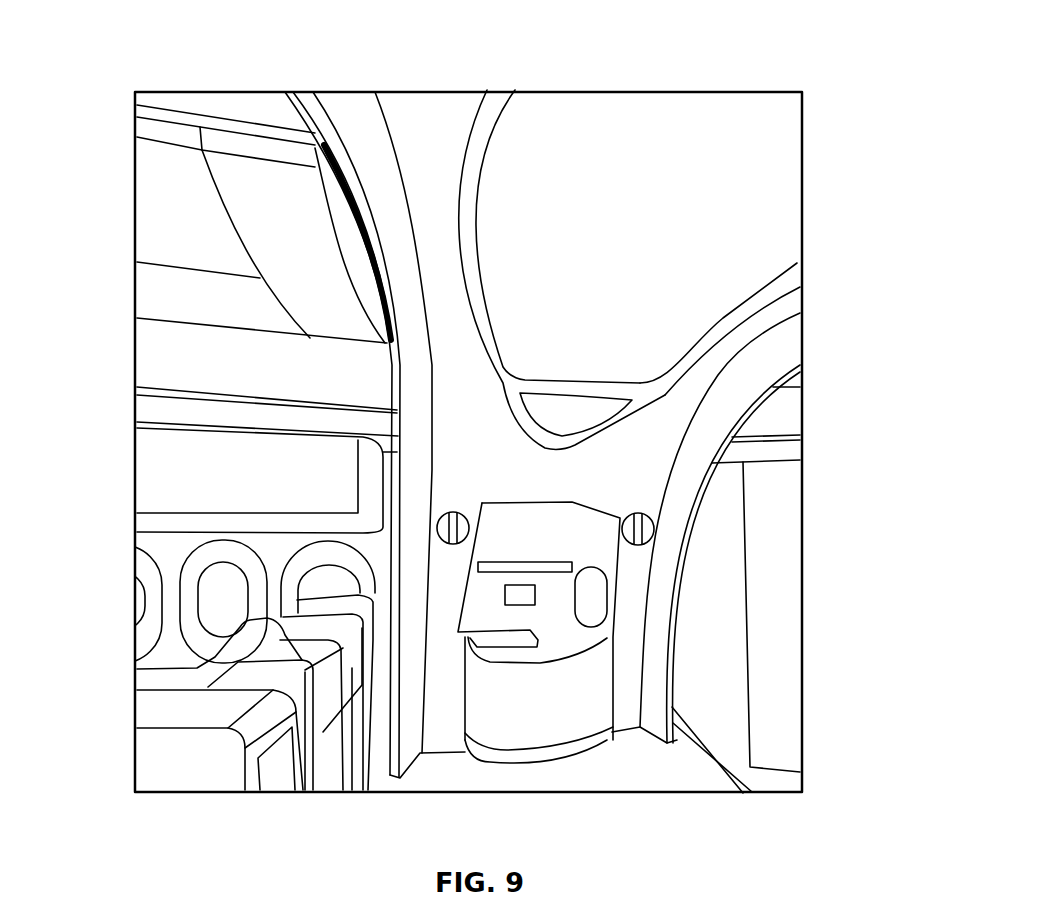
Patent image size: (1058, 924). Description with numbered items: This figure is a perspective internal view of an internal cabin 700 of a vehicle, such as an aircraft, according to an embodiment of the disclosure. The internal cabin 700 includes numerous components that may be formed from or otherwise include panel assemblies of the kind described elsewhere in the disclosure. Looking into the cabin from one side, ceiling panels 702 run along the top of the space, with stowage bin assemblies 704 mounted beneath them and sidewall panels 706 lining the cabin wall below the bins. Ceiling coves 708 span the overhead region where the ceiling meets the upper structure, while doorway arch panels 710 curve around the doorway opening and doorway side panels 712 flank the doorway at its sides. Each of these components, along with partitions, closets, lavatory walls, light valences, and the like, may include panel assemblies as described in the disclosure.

The internal cabin 700 is at (838, 68).
The ceiling panels 702 is at (163, 358).
The stowage bin assemblies 704 is at (163, 468).
The sidewall panels 706 is at (185, 608).
The ceiling coves 708 is at (742, 135).
The doorway arch panels 710 is at (728, 385).
The doorway side panels 712 is at (632, 676).